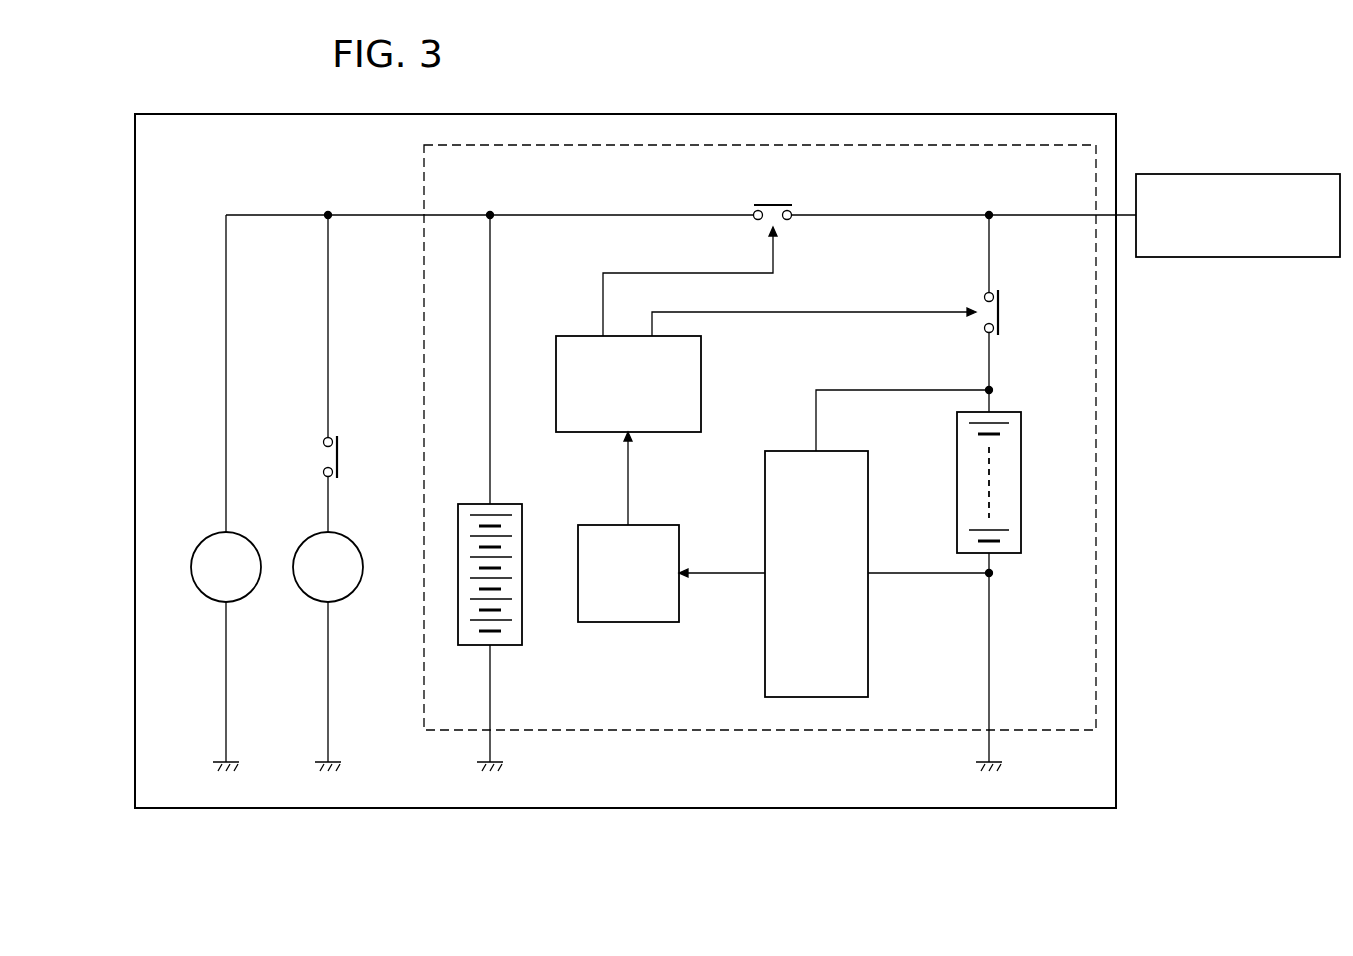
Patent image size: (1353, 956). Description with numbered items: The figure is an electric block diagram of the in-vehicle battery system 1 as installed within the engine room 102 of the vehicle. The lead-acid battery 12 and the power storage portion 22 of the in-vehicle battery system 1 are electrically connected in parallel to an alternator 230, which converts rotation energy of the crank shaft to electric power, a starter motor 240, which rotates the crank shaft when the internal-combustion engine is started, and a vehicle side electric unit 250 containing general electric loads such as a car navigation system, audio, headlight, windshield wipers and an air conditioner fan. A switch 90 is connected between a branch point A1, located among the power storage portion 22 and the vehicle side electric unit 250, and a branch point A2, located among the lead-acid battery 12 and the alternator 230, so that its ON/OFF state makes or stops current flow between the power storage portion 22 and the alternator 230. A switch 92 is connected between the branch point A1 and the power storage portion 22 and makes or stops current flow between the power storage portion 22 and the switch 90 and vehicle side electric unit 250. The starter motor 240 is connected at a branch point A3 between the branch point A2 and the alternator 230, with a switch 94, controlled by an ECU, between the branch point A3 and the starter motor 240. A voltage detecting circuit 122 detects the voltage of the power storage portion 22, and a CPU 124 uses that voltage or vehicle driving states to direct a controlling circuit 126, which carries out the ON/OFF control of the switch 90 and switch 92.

The in-vehicle battery system 1 is at (720, 732).
The lead-acid battery 12 is at (505, 647).
The power storage portion 22 is at (1023, 515).
The switch 90 is at (776, 198).
The switch 92 is at (1003, 313).
The switch 94 is at (342, 453).
The engine room 102 is at (1117, 785).
The voltage detecting circuit 122 is at (801, 450).
The CPU 124 is at (649, 523).
The controlling circuit 126 is at (703, 346).
The alternator 230 is at (205, 540).
The starter motor 240 is at (351, 540).
The vehicle side electric unit 250 is at (1303, 258).
The branch point A1 is at (992, 212).
The branch point A2 is at (493, 212).
The branch point A3 is at (331, 212).